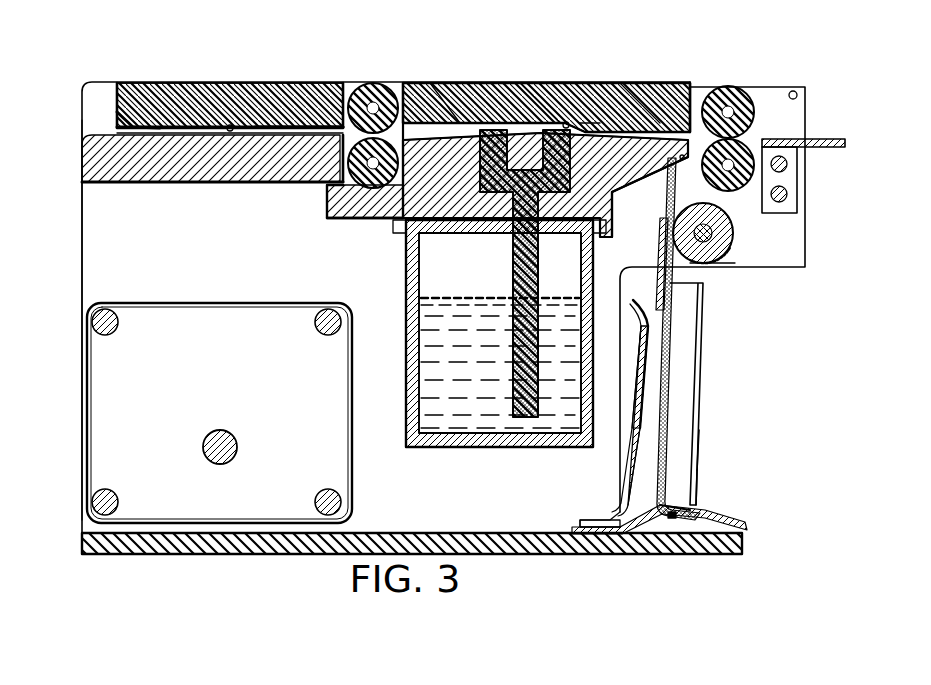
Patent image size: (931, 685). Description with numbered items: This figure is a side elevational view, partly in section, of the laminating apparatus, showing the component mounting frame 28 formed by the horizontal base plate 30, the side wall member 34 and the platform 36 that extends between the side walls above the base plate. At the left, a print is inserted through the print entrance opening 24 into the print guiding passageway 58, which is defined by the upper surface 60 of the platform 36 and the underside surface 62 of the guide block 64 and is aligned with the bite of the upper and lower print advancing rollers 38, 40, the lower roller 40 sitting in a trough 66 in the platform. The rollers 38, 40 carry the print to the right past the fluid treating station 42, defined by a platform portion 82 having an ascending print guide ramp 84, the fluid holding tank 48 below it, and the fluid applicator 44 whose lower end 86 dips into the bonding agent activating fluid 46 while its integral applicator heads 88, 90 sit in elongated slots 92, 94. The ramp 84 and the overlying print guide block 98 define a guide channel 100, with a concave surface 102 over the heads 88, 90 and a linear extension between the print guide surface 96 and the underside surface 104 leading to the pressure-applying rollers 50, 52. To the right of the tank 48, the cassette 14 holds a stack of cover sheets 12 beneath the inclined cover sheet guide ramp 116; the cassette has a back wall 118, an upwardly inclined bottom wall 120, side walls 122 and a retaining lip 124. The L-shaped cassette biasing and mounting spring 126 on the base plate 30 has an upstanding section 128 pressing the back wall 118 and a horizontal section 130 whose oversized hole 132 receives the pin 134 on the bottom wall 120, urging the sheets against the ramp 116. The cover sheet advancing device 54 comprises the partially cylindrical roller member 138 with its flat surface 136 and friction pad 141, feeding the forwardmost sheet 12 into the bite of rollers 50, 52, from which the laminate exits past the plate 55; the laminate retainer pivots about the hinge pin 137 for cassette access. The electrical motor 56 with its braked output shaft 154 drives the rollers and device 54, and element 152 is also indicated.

The cover sheet 12 is at (678, 330).
The cassette 14 is at (708, 380).
The print entrance opening 24 is at (127, 128).
The component mounting frame 28 is at (812, 85).
The base plate 30 is at (528, 554).
The side wall member 34 is at (106, 216).
The platform 36 is at (90, 158).
The upper print advancing roller 38 is at (377, 96).
The lower print advancing roller 40 is at (340, 182).
The fluid treating station 42 is at (470, 78).
The fluid applicator 44 is at (448, 195).
The bonding agent activating fluid 46 is at (440, 340).
The fluid holding tank 48 is at (404, 402).
The upper pressure-applying roller 50 is at (713, 90).
The lower pressure-applying roller 52 is at (735, 185).
The cover sheet advancing device 54 is at (737, 232).
The plate 55 is at (812, 139).
The electrical motor 56 is at (100, 418).
The print guiding passageway 58 is at (160, 127).
The upper surface 60 is at (196, 135).
The underside surface 62 is at (232, 127).
The guide block 64 is at (267, 80).
The trough 66 is at (330, 213).
The platform portion 82 is at (395, 215).
The print guide ramp 84 is at (462, 140).
The applicator end 86 is at (512, 270).
The applicator head 88 is at (510, 90).
The applicator head 90 is at (565, 118).
The elongated slot 92 is at (515, 200).
The elongated slot 94 is at (613, 200).
The print guide surface 96 is at (660, 120).
The print guide block 98 is at (652, 95).
The guide channel 100 is at (482, 122).
The concave surface 102 is at (540, 122).
The underside surface 104 is at (620, 125).
The cover sheet guide ramp 116 is at (648, 170).
The back wall 118 is at (662, 285).
The bottom wall 120 is at (672, 506).
The side walls 122 is at (684, 425).
The cover sheet retaining lip 124 is at (698, 456).
The cassette biasing and mounting spring 126 is at (612, 505).
The upstanding spring section 128 is at (625, 460).
The horizontal spring section 130 is at (710, 504).
The oversized hole 132 is at (662, 512).
The pin 134 is at (676, 518).
The flat surface 136 is at (660, 238).
The hinge pin 137 is at (792, 90).
The partially cylindrical roller member 138 is at (722, 255).
The friction pad 141 is at (722, 265).
The pivot 152 is at (690, 158).
The motor output shaft 154 is at (225, 432).